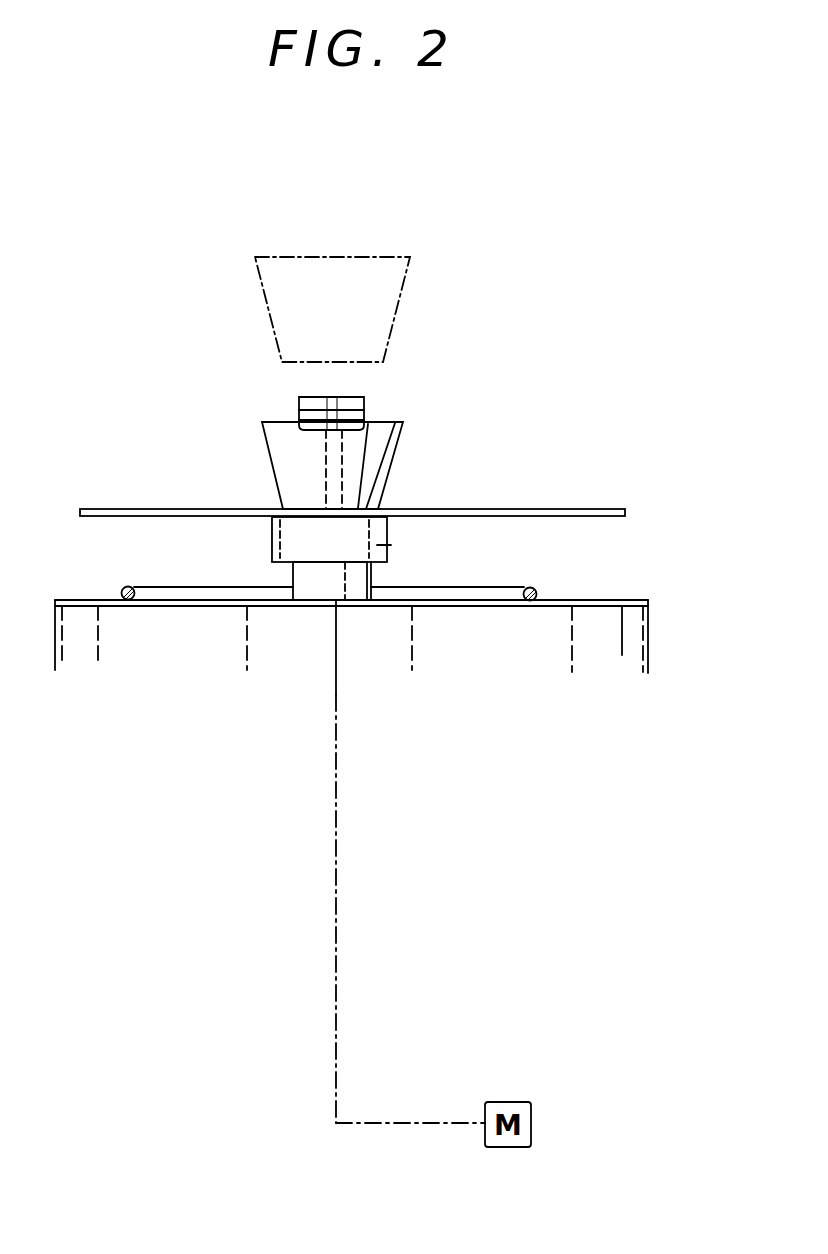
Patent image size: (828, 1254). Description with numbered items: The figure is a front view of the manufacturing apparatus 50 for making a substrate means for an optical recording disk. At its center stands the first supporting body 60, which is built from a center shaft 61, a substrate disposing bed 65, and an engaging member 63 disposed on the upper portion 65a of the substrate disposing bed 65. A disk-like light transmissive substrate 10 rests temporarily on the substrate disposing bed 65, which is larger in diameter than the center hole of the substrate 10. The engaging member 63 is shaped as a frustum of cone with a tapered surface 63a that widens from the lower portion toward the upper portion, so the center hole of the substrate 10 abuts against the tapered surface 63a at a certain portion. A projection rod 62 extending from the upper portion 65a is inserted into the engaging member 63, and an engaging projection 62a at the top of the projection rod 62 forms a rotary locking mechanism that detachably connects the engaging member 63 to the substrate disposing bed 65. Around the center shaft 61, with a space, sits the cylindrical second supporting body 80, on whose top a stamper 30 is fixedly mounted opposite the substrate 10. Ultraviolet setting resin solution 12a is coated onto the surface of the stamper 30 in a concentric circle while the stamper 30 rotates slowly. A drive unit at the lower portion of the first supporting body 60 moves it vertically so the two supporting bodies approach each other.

The manufacturing apparatus 50 is at (455, 218).
The engaging member 63 is at (390, 300).
The engaging projection 62a is at (353, 407).
The projection rod 62 is at (325, 465).
The tapered surface 63a is at (393, 460).
The upper portion of the substrate disposing bed 65a is at (355, 508).
The light transmissive substrate 10 is at (572, 509).
The substrate disposing bed 65 is at (290, 533).
The first supporting body 60 is at (391, 545).
The center shaft 61 is at (372, 578).
The ultraviolet setting resin solution 12a is at (537, 590).
The stamper 30 is at (628, 600).
The second supporting body 80 is at (136, 666).